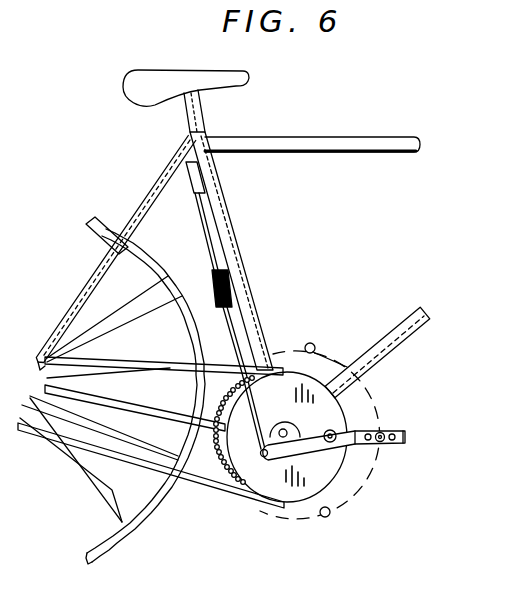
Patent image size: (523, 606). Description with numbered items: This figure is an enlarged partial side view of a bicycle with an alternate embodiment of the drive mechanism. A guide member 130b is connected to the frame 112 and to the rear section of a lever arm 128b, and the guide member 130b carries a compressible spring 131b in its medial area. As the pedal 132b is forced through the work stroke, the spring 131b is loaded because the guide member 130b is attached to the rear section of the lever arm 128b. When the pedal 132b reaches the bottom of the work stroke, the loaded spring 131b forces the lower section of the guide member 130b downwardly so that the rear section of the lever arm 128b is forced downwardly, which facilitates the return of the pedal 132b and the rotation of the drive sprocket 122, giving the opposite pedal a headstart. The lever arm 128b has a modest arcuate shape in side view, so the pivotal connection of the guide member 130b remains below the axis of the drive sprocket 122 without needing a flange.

The frame 112 is at (287, 137).
The guide member 130b is at (196, 203).
The compressible spring 131b is at (229, 289).
The pedal 132b is at (404, 432).
The lever arm 128b is at (331, 445).
The drive sprocket 122 is at (232, 488).